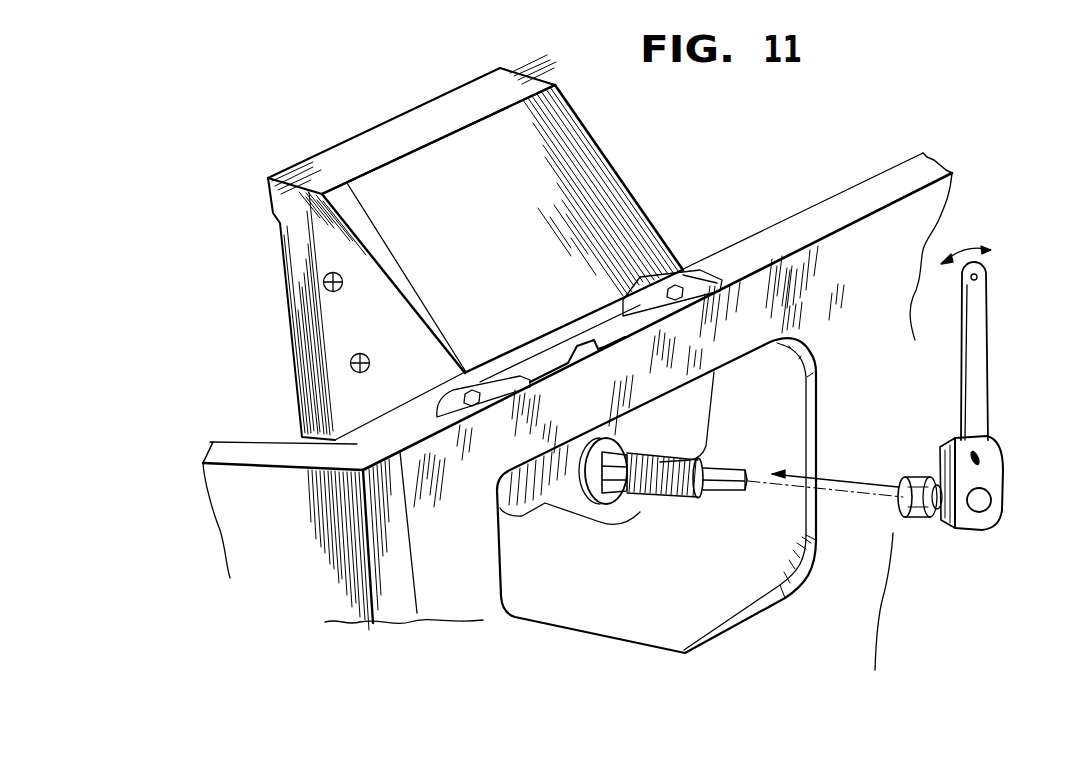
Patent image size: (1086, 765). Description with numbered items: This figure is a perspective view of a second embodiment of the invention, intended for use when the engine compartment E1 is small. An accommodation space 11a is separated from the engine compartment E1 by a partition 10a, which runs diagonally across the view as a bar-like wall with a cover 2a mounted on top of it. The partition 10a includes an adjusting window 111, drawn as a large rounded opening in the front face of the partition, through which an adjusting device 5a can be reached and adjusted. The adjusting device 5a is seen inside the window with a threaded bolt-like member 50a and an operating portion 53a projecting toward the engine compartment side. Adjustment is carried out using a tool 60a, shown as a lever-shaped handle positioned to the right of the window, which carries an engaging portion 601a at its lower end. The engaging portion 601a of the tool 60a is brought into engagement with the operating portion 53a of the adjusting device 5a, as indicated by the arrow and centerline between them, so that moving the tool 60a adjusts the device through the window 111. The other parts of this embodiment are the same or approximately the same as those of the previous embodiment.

The cover 2a is at (617, 185).
The partition 10a is at (846, 248).
The accommodation space 11a is at (280, 430).
The adjusting window 111 is at (705, 621).
The bolt 50a is at (622, 503).
The operating portion 53a is at (718, 497).
The adjusting device 5a is at (731, 466).
The tool 60a is at (977, 348).
The engaging portion 601a is at (898, 490).
The engine compartment E1 is at (864, 607).